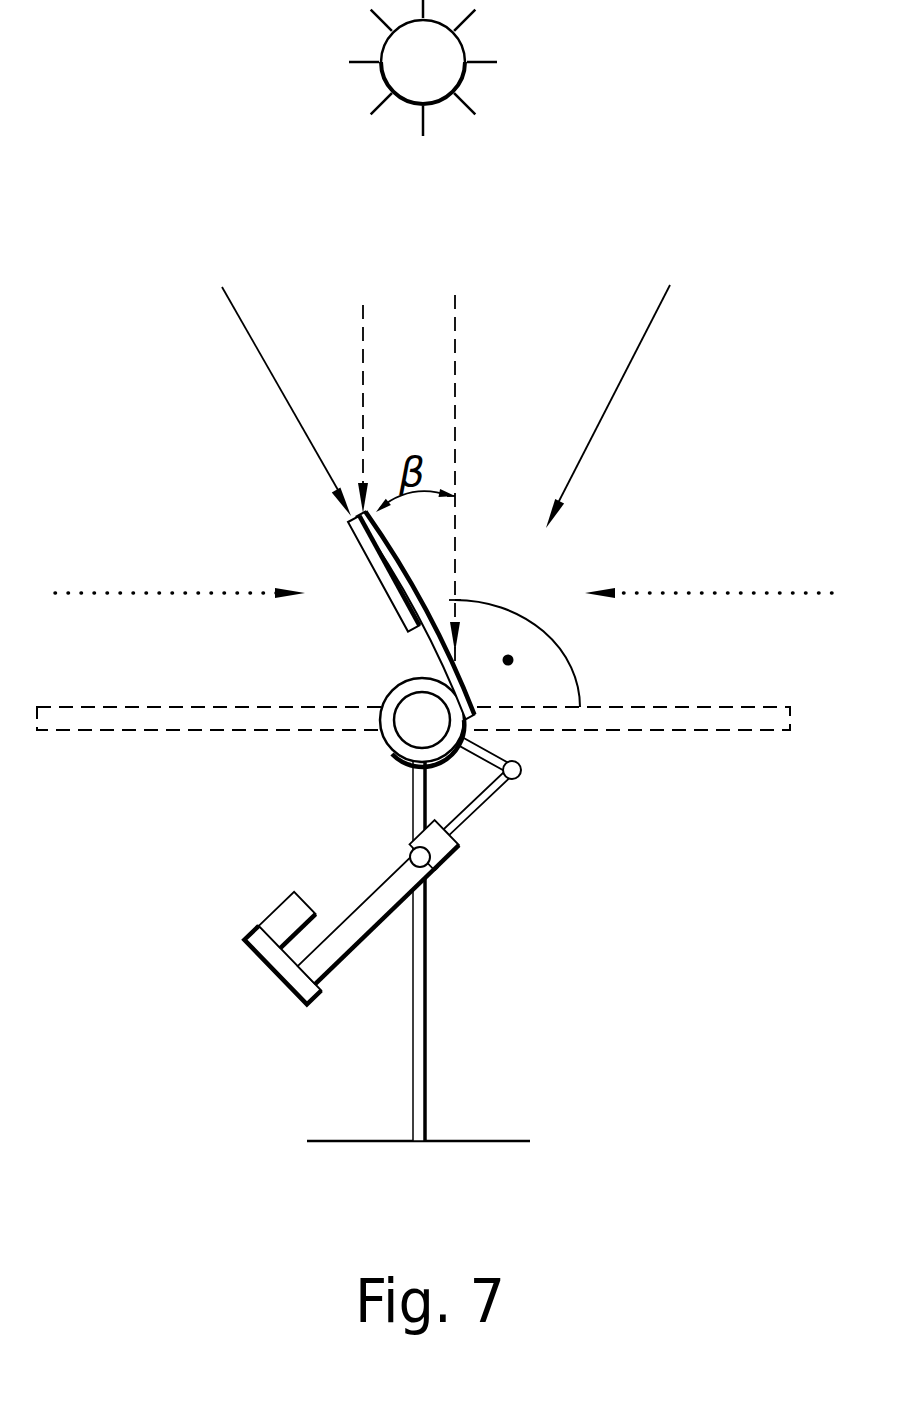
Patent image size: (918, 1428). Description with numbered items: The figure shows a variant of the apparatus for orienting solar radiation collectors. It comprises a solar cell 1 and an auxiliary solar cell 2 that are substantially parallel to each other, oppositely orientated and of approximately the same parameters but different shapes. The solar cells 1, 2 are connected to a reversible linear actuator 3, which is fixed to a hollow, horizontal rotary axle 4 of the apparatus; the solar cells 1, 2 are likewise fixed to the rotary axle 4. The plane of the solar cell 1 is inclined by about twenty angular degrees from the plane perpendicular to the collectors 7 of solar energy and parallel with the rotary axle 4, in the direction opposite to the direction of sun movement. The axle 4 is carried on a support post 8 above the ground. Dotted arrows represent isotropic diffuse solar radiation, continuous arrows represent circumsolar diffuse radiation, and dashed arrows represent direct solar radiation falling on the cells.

The solar cell 1 is at (415, 566).
The auxiliary solar cell 2 is at (358, 541).
The reversible linear actuator 3 is at (352, 905).
The rotary axle 4 is at (383, 750).
The collectors of solar energy 7 is at (600, 707).
The support post 8 is at (427, 1080).